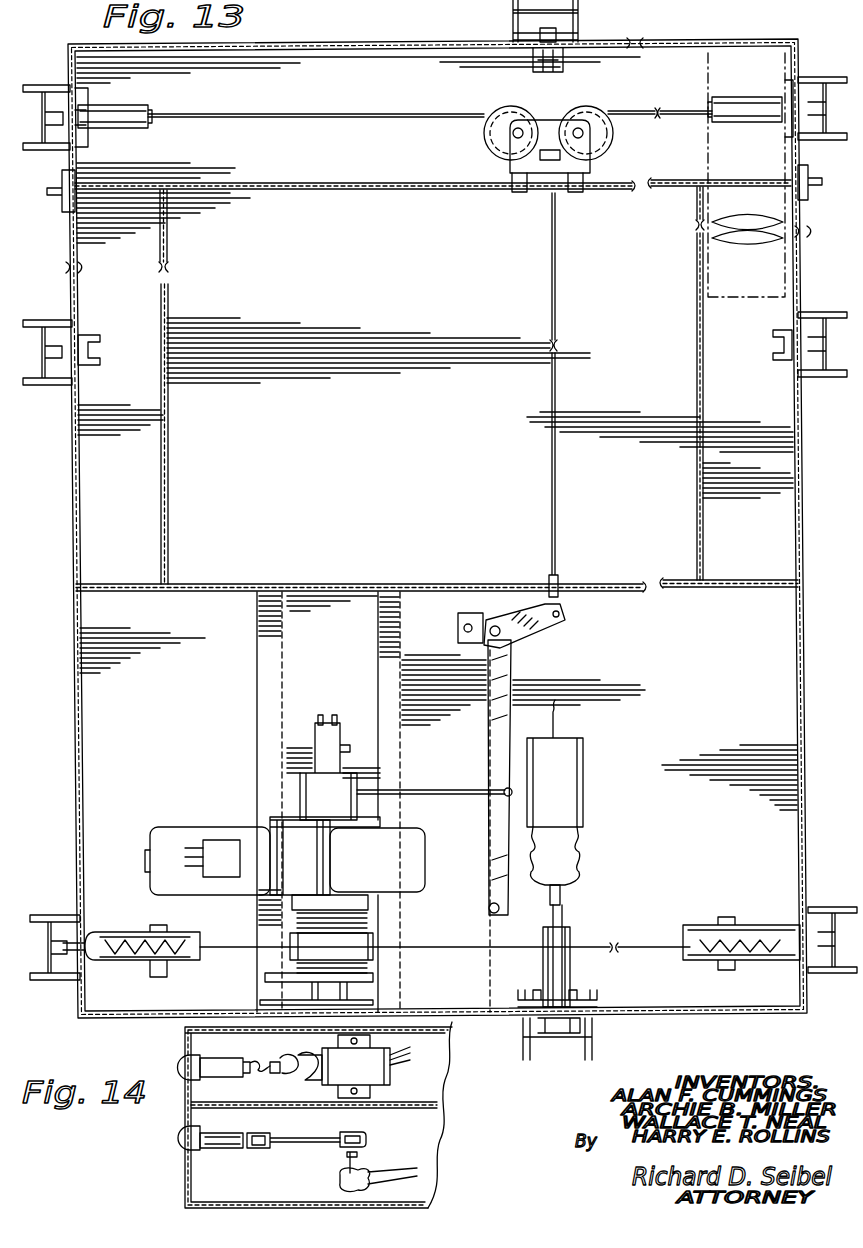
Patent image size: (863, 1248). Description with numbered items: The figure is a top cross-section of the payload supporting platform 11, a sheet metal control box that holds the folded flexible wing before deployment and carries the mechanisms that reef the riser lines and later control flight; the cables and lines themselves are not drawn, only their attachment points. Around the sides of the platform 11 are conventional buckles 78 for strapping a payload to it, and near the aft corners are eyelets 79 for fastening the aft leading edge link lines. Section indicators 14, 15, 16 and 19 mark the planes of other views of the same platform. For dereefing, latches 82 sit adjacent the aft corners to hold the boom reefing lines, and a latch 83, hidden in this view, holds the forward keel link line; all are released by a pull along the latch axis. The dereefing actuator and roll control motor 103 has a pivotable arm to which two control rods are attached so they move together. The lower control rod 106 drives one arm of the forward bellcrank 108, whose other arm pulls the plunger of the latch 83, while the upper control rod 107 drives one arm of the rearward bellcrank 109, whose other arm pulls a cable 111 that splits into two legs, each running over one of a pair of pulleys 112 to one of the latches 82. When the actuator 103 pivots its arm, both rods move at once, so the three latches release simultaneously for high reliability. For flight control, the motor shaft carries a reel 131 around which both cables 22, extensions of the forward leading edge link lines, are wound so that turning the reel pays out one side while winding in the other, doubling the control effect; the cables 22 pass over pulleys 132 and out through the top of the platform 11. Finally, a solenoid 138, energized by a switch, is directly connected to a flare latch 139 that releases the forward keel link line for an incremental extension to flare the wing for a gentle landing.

In FIG. 13, the payload supporting platform 11 is at (692, 1018).
In FIG. 13, the section line 14- 14 is at (603, 1071).
In FIG. 13, the section line 15- 15 is at (797, 1006).
In FIG. 13, the section line 16- 16 is at (790, 60).
In FIG. 13, the section line 19 is at (328, 722).
In FIG. 13, the cables 22 is at (432, 946).
In FIG. 13, the buckles 78 is at (45, 152).
In FIG. 13, the eyelets 79 is at (50, 196).
In FIG. 13, the latches 82 is at (128, 108).
In FIG. 14, the latch 83 is at (212, 1135).
In FIG. 13, the dereefing actuator and roll control motor 103 is at (421, 865).
In FIG. 14, the lower control rod 106 is at (358, 1156).
In FIG. 13, the upper control rod 107 is at (462, 790).
In FIG. 14, the upper control rod 107 is at (362, 1140).
In FIG. 13, the forward bellcrank 108 is at (487, 887).
In FIG. 14, the forward bellcrank 108 is at (297, 1138).
In FIG. 13, the rearward bellcrank 109 is at (500, 656).
In FIG. 14, the rearward bellcrank 109 is at (385, 1180).
In FIG. 13, the cable 111 is at (343, 112).
In FIG. 13, the pulleys 112 is at (590, 105).
In FIG. 13, the reel 131 is at (370, 963).
In FIG. 13, the pulleys 132 is at (177, 938).
In FIG. 13, the solenoid 138 is at (575, 806).
In FIG. 14, the solenoid 138 is at (388, 1070).
In FIG. 13, the flare latch 139 is at (575, 976).
In FIG. 14, the flare latch 139 is at (228, 1060).